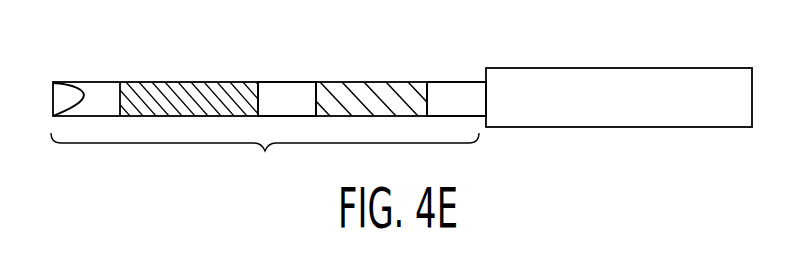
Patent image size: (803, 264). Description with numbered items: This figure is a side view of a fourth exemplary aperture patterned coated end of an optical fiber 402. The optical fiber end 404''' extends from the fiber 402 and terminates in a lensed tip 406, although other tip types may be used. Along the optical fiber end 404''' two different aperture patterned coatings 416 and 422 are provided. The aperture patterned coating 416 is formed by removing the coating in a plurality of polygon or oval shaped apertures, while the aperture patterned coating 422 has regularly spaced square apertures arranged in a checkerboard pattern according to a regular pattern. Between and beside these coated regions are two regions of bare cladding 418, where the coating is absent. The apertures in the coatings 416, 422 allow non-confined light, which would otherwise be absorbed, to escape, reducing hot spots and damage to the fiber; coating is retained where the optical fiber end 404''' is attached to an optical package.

The optical fiber 402 is at (640, 78).
The optical fiber end 404''' is at (268, 133).
The lensed tip 406 is at (55, 83).
The aperture patterned coating 416 is at (133, 82).
The bare cladding 418 is at (287, 89).
The aperture patterned coating 422 is at (377, 90).